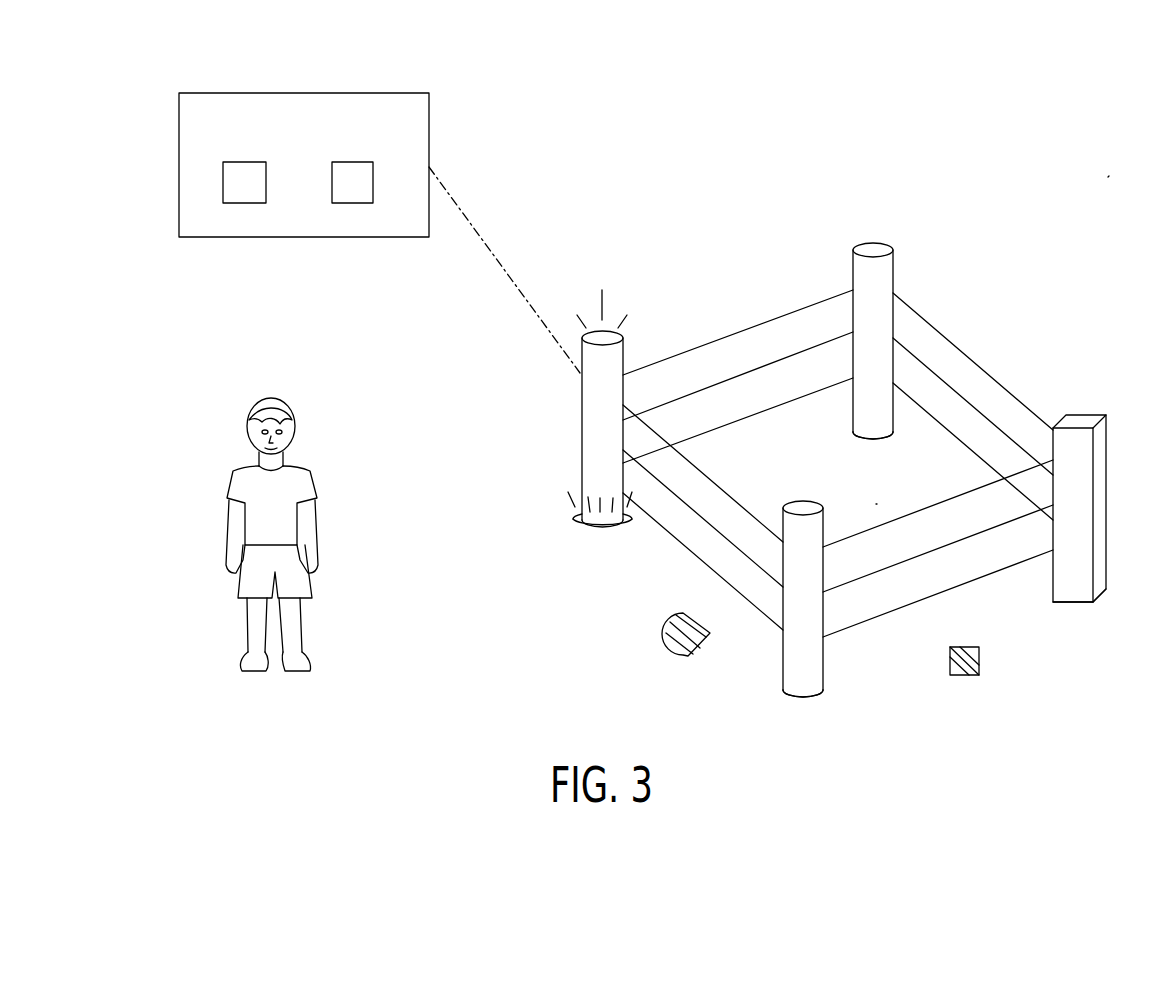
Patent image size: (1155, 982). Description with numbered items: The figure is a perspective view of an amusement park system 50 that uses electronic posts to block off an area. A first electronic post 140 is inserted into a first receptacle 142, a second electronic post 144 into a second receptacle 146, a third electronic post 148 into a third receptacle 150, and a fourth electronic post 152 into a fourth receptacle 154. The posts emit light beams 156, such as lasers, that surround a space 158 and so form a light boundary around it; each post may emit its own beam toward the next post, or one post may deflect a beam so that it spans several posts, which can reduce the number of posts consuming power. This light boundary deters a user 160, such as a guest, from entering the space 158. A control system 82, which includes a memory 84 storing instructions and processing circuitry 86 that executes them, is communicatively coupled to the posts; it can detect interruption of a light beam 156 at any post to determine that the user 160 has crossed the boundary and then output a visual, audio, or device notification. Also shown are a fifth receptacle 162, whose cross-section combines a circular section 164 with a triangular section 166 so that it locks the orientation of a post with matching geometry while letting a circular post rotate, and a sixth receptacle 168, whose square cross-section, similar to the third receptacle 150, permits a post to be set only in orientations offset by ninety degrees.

The amusement park system 50 is at (1112, 173).
The control system 82 is at (179, 110).
The memory 84 is at (266, 182).
The processing circuitry 86 is at (373, 182).
The first electronic post 140 is at (588, 431).
The first receptacle 142 is at (584, 541).
The second electronic post 144 is at (888, 283).
The second receptacle 146 is at (865, 451).
The third electronic post 148 is at (1100, 487).
The third receptacle 150 is at (1081, 614).
The fourth electronic post 152 is at (817, 652).
The fourth receptacle 154 is at (800, 714).
The light beams 156 is at (741, 330).
The space 158 is at (896, 501).
The user 160 is at (250, 408).
The fifth receptacle 162 is at (683, 671).
The circular section 164 is at (665, 633).
The triangular section 166 is at (700, 647).
The sixth receptacle 168 is at (980, 657).